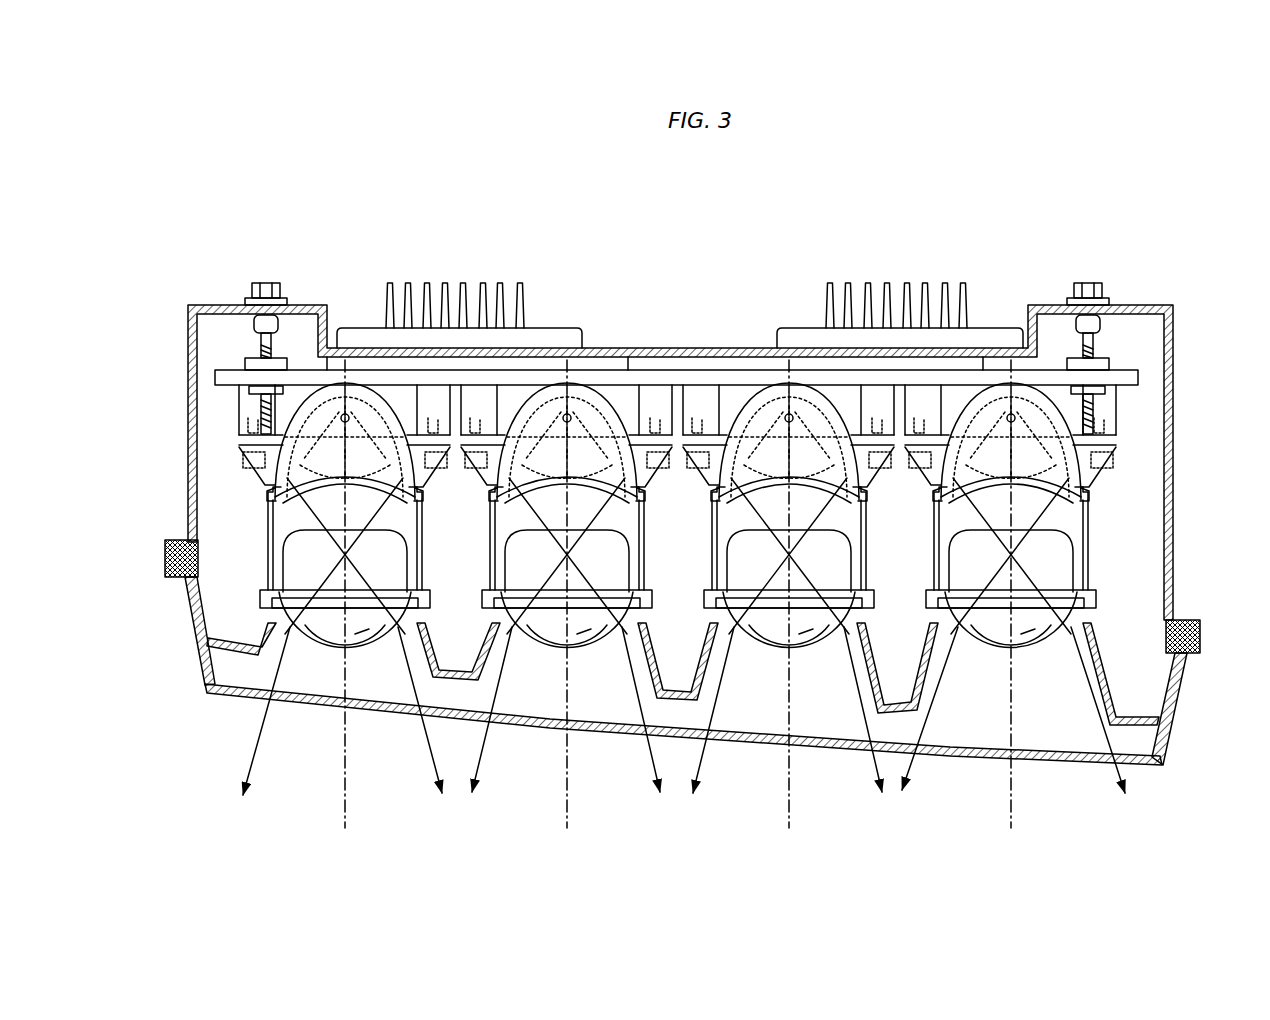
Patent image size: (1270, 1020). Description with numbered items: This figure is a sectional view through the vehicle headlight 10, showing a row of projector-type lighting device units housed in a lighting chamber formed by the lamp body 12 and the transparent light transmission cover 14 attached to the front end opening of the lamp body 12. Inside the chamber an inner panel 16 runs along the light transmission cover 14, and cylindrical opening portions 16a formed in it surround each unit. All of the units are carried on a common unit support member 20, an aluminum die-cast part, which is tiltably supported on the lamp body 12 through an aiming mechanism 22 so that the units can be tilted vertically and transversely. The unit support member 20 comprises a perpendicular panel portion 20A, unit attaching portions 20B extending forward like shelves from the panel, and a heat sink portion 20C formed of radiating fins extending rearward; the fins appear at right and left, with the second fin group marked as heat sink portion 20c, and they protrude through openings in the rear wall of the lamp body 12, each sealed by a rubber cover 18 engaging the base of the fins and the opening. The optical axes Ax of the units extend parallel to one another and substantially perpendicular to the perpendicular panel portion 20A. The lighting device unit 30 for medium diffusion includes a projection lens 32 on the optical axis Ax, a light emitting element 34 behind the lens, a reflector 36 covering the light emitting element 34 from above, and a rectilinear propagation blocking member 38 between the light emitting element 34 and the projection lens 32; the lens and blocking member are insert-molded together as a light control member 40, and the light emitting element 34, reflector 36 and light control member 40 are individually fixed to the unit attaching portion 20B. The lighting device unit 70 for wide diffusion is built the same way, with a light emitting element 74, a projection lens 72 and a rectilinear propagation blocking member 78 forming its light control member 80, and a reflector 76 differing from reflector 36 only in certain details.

The vehicle headlight 10 is at (1125, 266).
The lamp body 12 is at (1180, 458).
The light transmission cover 14 is at (1035, 758).
The inner panel 16 is at (1150, 763).
The cylindrical opening portion 16a is at (867, 662).
The rubber cover 18 is at (352, 330).
The unit support member 20 is at (720, 358).
The perpendicular panel portion 20A is at (678, 380).
The unit attaching portion 20B is at (625, 395).
The heat sink portion 20C is at (470, 292).
The heat sink portion 20c is at (915, 292).
The aiming mechanism 22 is at (216, 336).
The lighting device unit for medium diffusion 30 is at (317, 668).
The projection lens 32 is at (357, 635).
The light emitting element 34 is at (330, 448).
The reflector 36 is at (414, 498).
The rectilinear propagation blocking member 38 is at (472, 520).
The light control member 40 is at (428, 578).
The lighting device unit for wide diffusion 70 is at (980, 685).
The projection lens 72 is at (1022, 640).
The light emitting element 74 is at (997, 447).
The reflector 76 is at (1040, 518).
The rectilinear propagation blocking member 78 is at (1080, 535).
The light control member 80 is at (1100, 600).
The optical axis Ax is at (360, 770).